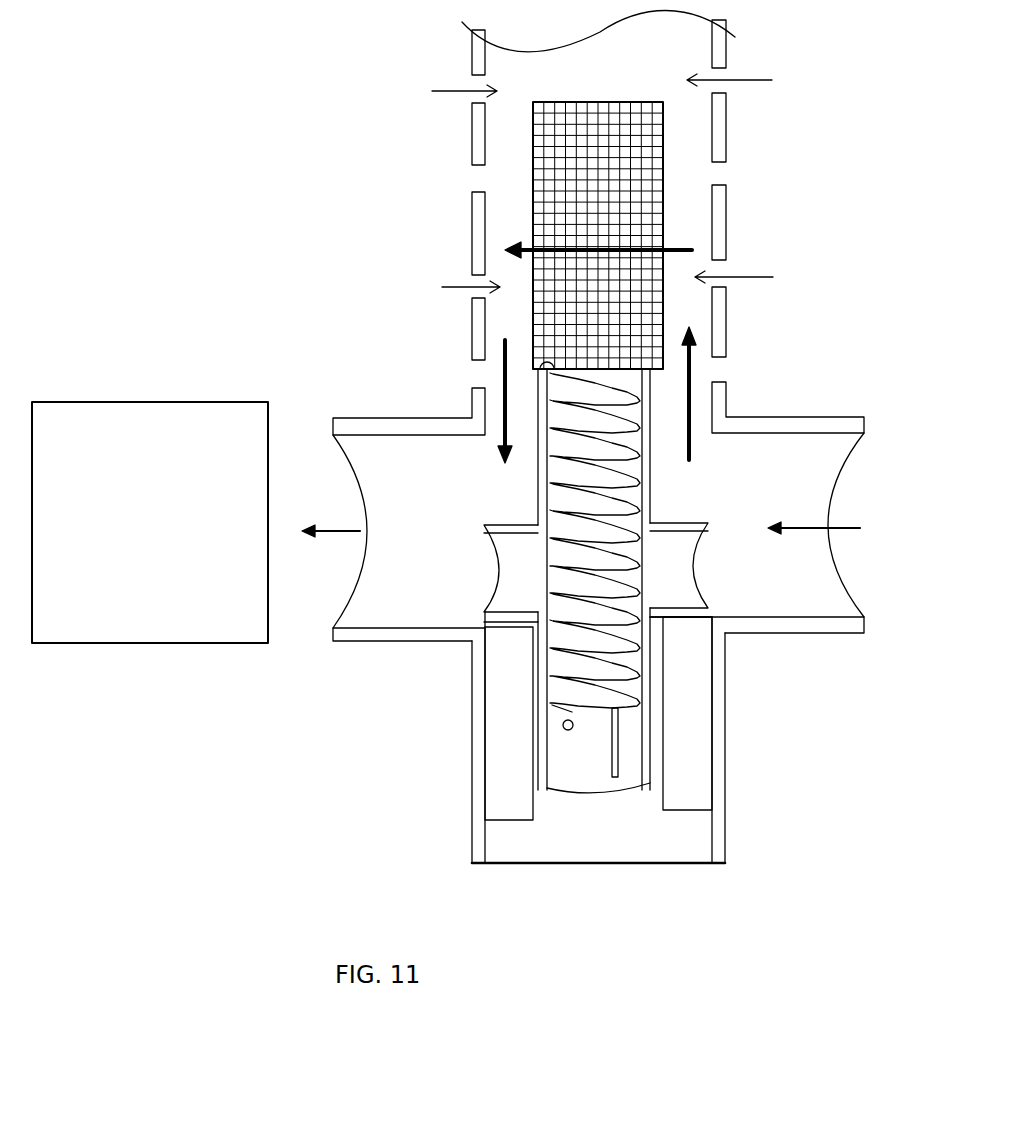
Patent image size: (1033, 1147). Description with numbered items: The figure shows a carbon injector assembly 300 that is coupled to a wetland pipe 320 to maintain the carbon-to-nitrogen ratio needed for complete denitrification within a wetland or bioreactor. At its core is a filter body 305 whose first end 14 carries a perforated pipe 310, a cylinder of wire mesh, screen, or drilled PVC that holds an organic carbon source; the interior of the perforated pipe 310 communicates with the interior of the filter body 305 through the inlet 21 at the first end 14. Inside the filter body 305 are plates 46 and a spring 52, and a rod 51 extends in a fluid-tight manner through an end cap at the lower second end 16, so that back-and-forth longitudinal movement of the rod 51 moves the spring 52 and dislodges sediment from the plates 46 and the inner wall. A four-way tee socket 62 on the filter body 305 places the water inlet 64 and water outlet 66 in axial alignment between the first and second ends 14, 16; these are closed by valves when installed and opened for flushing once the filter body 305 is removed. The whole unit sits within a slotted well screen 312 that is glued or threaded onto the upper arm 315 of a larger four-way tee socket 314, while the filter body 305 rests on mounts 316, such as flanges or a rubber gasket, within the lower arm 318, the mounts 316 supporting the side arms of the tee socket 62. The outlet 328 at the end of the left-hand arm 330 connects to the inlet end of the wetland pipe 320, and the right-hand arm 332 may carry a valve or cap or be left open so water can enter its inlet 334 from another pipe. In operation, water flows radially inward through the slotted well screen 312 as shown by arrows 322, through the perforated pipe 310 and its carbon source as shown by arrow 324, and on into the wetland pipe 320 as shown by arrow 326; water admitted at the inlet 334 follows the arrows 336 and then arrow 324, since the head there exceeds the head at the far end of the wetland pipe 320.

The assembly 300 is at (867, 111).
The filter body 305 is at (518, 522).
The perforated pipe 310 is at (665, 182).
The slotted well screen 312 is at (472, 220).
The four-way tee socket 314 is at (430, 660).
The upper arm 315 is at (727, 402).
The mounts 316 is at (505, 770).
The lower arm 318 is at (725, 800).
The wetland pipe 320 is at (143, 645).
The arrows 322 is at (446, 88).
The arrow 324 is at (672, 250).
The arrow 326 is at (330, 533).
The outlet 328 is at (357, 470).
The left-hand arm 330 is at (353, 418).
The right-hand arm 332 is at (780, 417).
The inlet 334 is at (843, 582).
The arrows 336 is at (500, 372).
The first end 14 is at (661, 376).
The second end 16 is at (550, 805).
The inlet 21 is at (539, 400).
The plates 46 is at (550, 700).
The rod 51 is at (620, 762).
The spring 52 is at (632, 683).
The four-way tee socket 62 is at (650, 505).
The water inlet 64 is at (695, 583).
The water outlet 66 is at (497, 587).